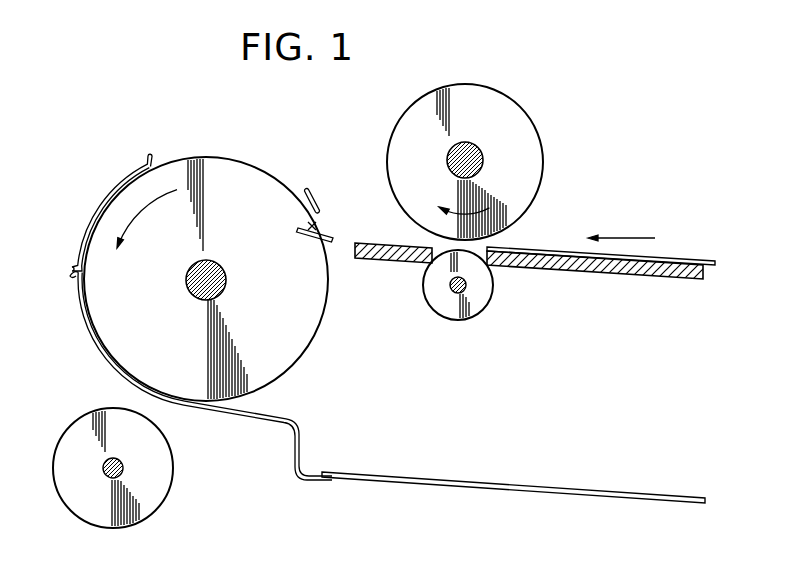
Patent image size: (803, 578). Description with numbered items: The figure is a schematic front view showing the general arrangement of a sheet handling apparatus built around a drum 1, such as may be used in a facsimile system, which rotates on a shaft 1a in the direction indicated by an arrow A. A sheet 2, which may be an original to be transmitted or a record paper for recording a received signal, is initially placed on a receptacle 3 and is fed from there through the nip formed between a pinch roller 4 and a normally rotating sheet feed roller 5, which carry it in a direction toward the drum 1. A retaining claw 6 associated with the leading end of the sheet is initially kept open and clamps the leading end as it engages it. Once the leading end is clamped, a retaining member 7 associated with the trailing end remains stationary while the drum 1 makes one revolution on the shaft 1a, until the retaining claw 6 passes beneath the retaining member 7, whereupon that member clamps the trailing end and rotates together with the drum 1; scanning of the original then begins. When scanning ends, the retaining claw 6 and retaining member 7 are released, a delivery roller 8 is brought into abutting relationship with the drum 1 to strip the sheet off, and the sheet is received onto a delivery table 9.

The drum 1 is at (308, 341).
The shaft 1a is at (226, 282).
The sheet 2 is at (553, 247).
The receptacle 3 is at (633, 268).
The pinch roller 4 is at (489, 297).
The sheet feed roller 5 is at (534, 137).
The retaining claw 6 is at (330, 233).
The retaining member 7 is at (318, 190).
The delivery roller 8 is at (172, 463).
The delivery table 9 is at (533, 477).
The arrow A is at (150, 205).